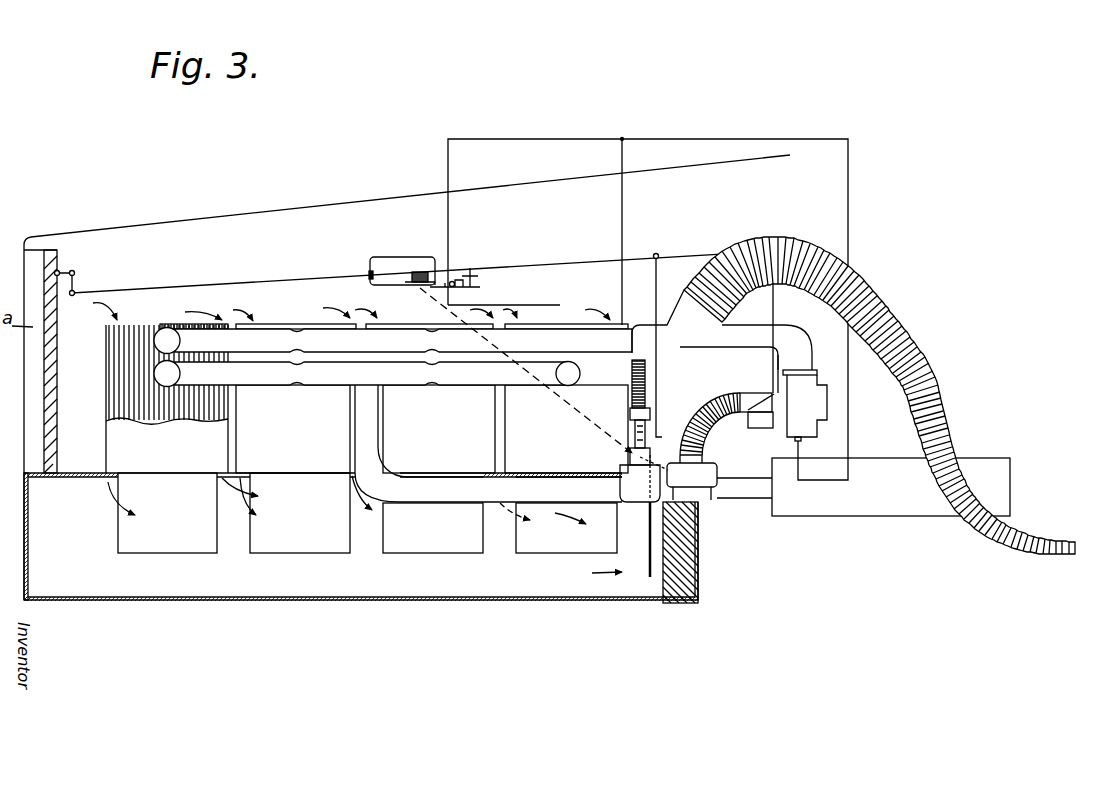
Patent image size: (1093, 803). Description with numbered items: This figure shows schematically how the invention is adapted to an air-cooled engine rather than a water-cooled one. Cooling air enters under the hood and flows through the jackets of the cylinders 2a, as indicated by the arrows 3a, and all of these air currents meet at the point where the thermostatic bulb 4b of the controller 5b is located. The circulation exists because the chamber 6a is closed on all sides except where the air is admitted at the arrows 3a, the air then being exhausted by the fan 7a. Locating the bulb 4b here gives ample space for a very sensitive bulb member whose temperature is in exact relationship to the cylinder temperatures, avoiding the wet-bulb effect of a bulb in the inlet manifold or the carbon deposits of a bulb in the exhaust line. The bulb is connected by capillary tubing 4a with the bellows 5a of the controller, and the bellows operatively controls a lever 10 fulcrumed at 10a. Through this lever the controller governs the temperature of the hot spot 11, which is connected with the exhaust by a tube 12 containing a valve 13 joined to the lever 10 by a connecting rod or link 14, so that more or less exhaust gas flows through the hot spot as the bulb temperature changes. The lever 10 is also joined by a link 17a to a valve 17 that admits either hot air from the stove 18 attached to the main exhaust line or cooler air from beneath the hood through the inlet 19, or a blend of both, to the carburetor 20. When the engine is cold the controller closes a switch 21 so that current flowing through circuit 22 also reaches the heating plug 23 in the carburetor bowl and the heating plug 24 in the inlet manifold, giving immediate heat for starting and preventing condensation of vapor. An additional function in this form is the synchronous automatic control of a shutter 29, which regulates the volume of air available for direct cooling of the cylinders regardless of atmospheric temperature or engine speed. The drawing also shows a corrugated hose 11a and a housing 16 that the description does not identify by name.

The cylinders 2a is at (360, 388).
The cooling air current arrows 3a is at (133, 502).
The capillary tubing 4a is at (563, 422).
The thermostatic bulb 4b is at (647, 550).
The bellows 5a is at (412, 285).
The controller 5b is at (402, 245).
The chamber 6a is at (407, 378).
The fan 7a is at (698, 558).
The lever 10 is at (270, 286).
The fulcrum 10a is at (368, 278).
The hot spot 11 is at (722, 330).
The flexible hose 11a is at (912, 325).
The tube 12 is at (632, 388).
The valve 13 is at (650, 440).
The connecting rod or link 14 is at (657, 378).
The blower 16 is at (891, 487).
The valve 17 is at (760, 405).
The connecting rod or link 17a is at (775, 318).
The stove 18 is at (719, 446).
The inlet 19 is at (760, 428).
The carburetor 20 is at (807, 406).
The switch 21 is at (470, 284).
The circuit 22 is at (512, 140).
The heating plug 23 is at (801, 440).
The heating plug 24 is at (618, 325).
The shutter 29 is at (57, 360).